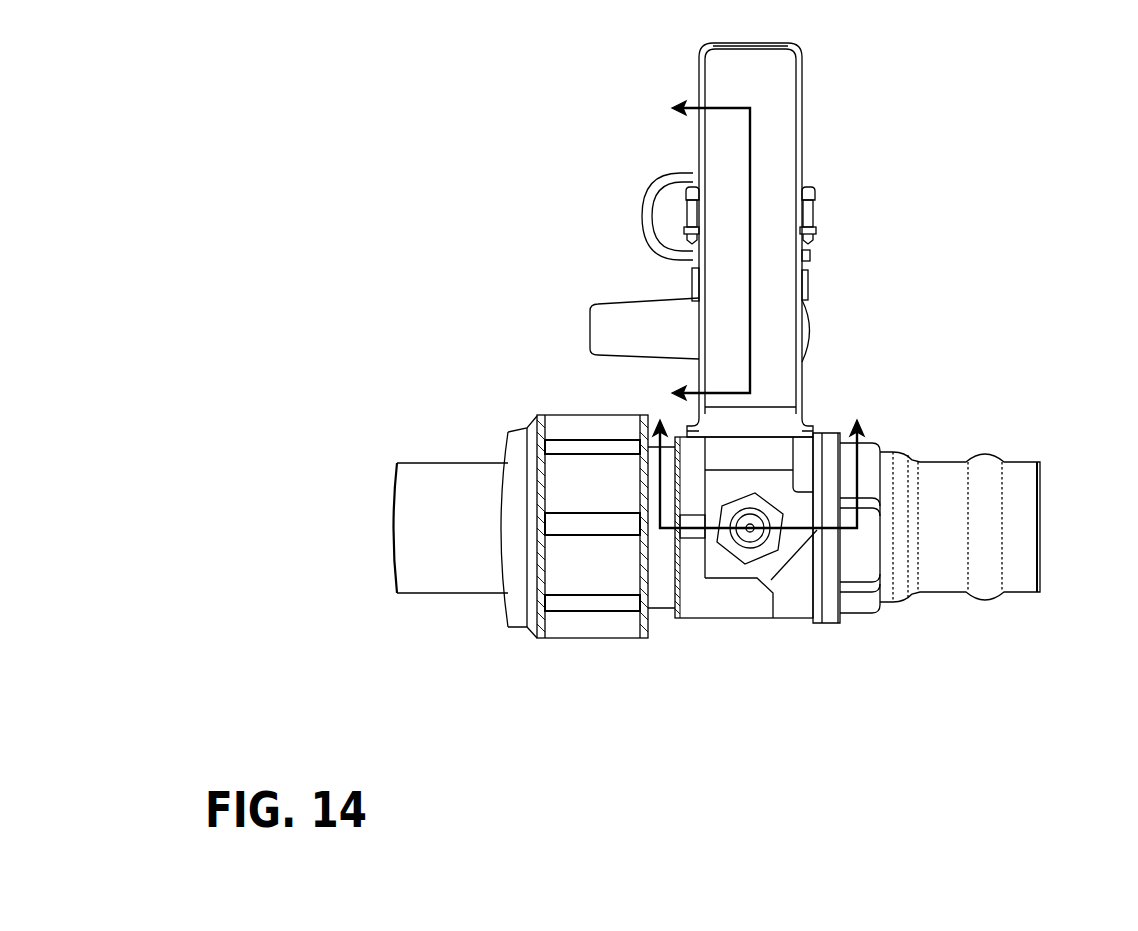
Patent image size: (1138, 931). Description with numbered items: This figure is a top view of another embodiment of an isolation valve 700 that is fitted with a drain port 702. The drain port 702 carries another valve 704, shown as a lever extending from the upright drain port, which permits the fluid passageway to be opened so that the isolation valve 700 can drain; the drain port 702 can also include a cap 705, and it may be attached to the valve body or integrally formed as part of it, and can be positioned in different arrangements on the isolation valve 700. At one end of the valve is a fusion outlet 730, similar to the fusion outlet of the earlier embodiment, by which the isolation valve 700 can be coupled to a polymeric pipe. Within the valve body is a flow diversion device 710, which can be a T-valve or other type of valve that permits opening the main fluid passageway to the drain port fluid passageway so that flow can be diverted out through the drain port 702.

The isolation valve 700 is at (1027, 212).
The drain port 702 is at (803, 390).
The valve 704 is at (618, 325).
The cap 705 is at (810, 211).
The flow diversion device 710 is at (760, 562).
The fusion outlet 730 is at (520, 455).